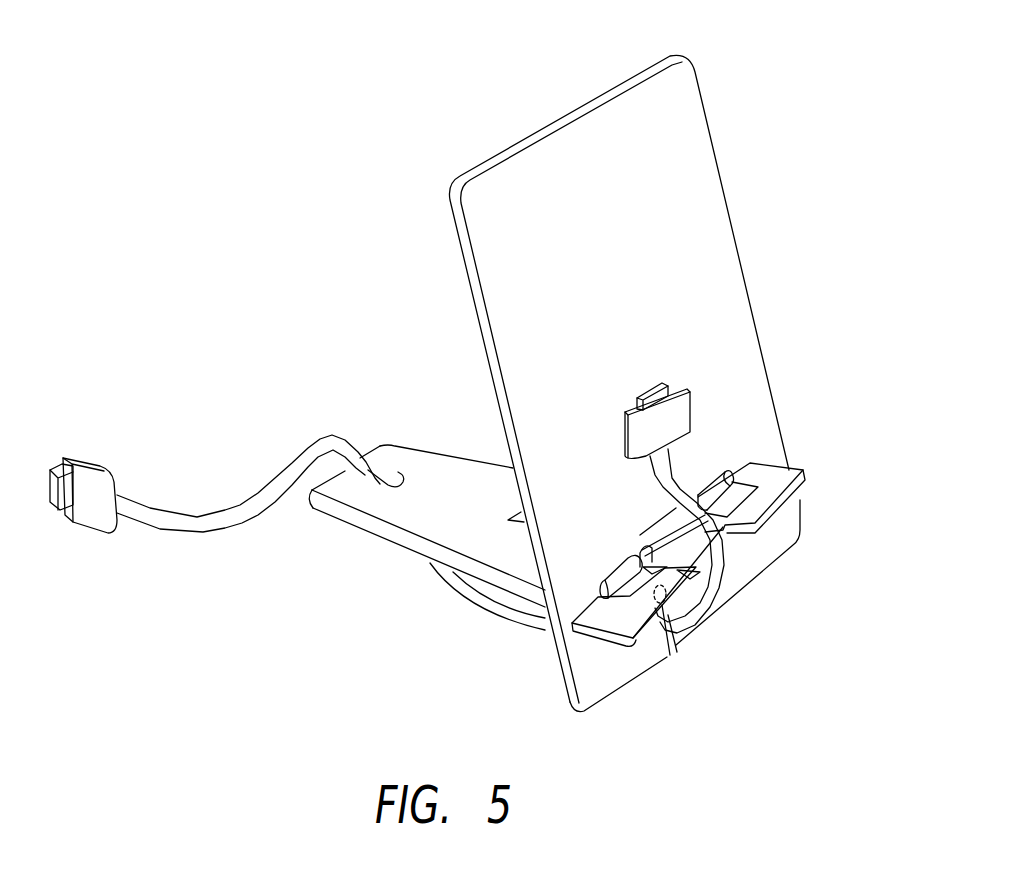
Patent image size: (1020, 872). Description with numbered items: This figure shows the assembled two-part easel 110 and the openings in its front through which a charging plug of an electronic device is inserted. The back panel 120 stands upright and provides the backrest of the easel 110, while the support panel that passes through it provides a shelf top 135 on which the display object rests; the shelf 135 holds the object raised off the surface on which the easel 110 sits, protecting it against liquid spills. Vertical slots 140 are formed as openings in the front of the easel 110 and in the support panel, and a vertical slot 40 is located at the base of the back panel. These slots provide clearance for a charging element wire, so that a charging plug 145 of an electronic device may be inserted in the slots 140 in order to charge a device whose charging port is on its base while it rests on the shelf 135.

The easel 110 is at (549, 68).
The back panel 120 is at (723, 320).
The shelf top 135 is at (790, 475).
The vertical slots 140 is at (382, 473).
The charging plug 145 is at (138, 498).
The vertical slot 40 is at (672, 645).